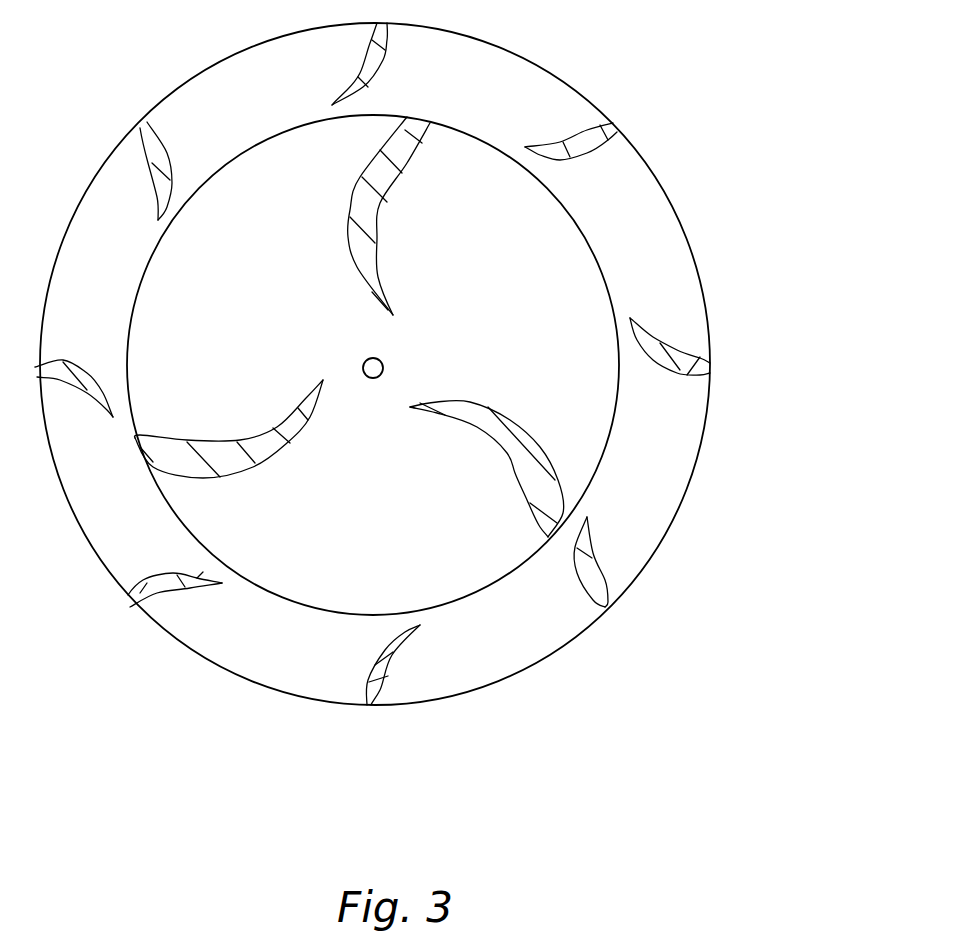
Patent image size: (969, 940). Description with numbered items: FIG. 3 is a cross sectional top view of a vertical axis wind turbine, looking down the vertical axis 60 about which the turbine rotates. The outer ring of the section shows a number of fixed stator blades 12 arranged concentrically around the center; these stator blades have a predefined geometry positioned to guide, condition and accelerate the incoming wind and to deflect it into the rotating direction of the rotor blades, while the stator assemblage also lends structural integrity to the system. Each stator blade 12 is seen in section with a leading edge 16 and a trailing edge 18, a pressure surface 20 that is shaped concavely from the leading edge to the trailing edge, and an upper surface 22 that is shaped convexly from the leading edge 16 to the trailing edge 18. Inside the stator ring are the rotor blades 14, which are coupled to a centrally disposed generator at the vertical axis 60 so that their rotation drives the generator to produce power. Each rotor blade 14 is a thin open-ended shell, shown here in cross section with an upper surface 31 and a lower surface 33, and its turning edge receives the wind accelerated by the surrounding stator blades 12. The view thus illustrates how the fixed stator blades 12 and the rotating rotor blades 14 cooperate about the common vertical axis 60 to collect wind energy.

The stator blade 12 is at (610, 572).
The rotor blade 14 is at (567, 488).
The leading edge 16 is at (130, 607).
The trailing edge 18 is at (222, 583).
The pressure surface 20 is at (390, 668).
The upper surface 22 is at (420, 625).
The upper surface 31 is at (540, 440).
The lower surface 33 is at (513, 468).
The vertical axis 60 is at (383, 365).